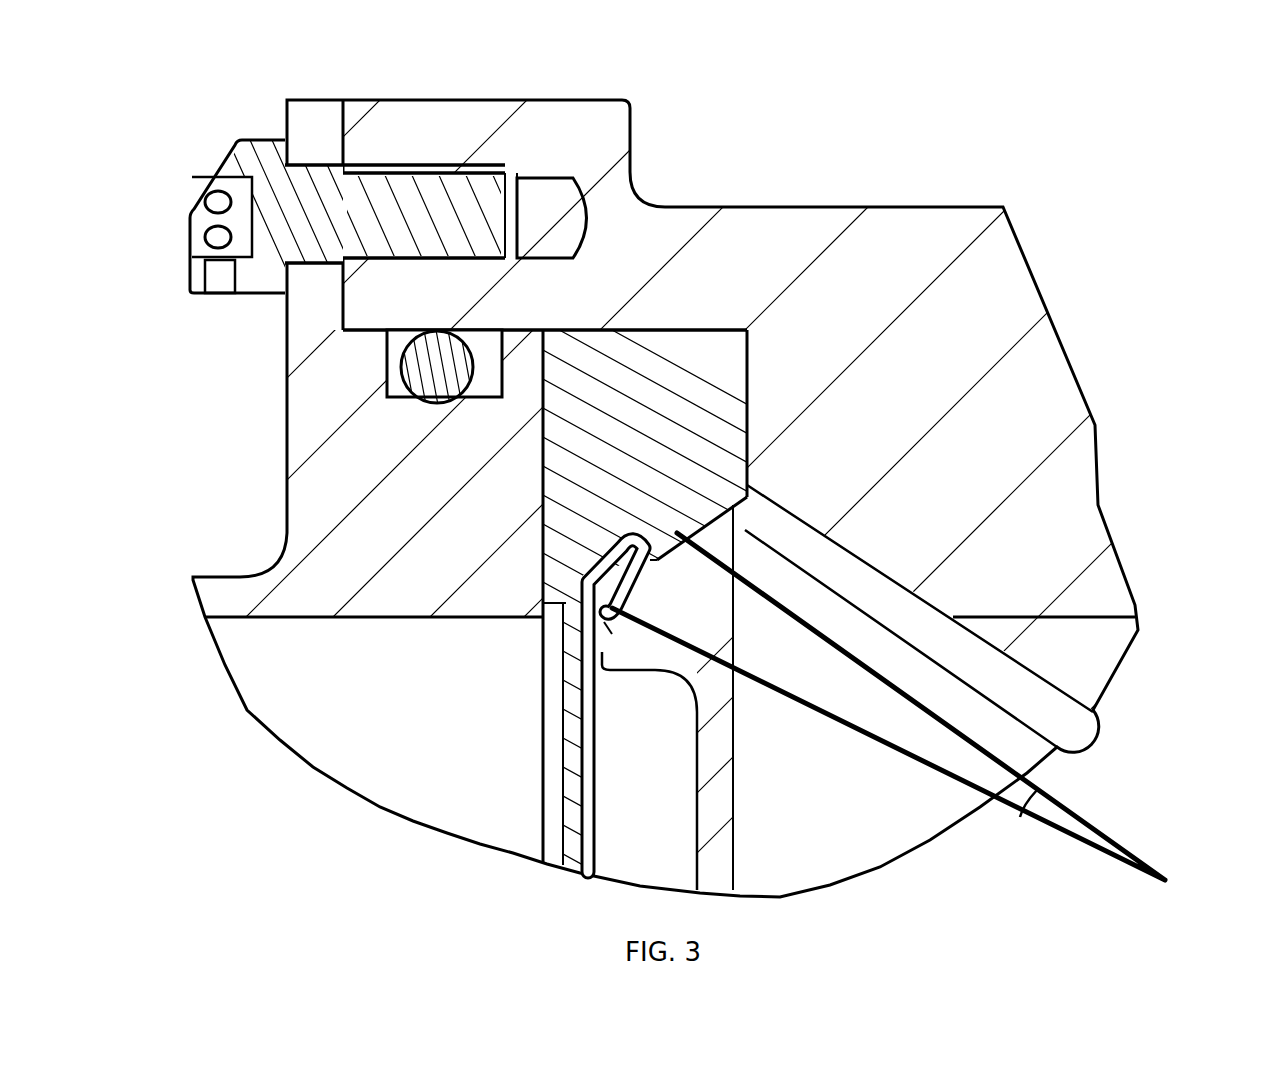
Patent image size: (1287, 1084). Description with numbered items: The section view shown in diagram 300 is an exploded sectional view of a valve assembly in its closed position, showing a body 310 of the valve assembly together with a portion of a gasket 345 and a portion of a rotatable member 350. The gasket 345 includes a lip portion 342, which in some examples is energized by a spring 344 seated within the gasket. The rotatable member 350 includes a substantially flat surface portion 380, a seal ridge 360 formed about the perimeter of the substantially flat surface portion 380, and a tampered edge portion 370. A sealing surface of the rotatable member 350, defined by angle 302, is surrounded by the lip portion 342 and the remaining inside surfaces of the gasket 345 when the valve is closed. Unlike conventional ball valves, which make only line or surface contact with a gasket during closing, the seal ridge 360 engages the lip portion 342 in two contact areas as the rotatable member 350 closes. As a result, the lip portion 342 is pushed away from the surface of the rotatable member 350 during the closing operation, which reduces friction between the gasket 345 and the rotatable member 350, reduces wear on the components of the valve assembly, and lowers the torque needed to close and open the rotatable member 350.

The diagram 300 is at (643, 504).
The body 310 is at (655, 137).
The gasket 345 is at (678, 317).
The spring 344 is at (637, 561).
The tampered edge portion 370 is at (697, 535).
The lip portion 342 is at (647, 570).
The rotatable member 350 is at (777, 588).
The seal ridge 360 is at (613, 630).
The substantially flat surface portion 380 is at (683, 773).
The angle 302 is at (1075, 817).